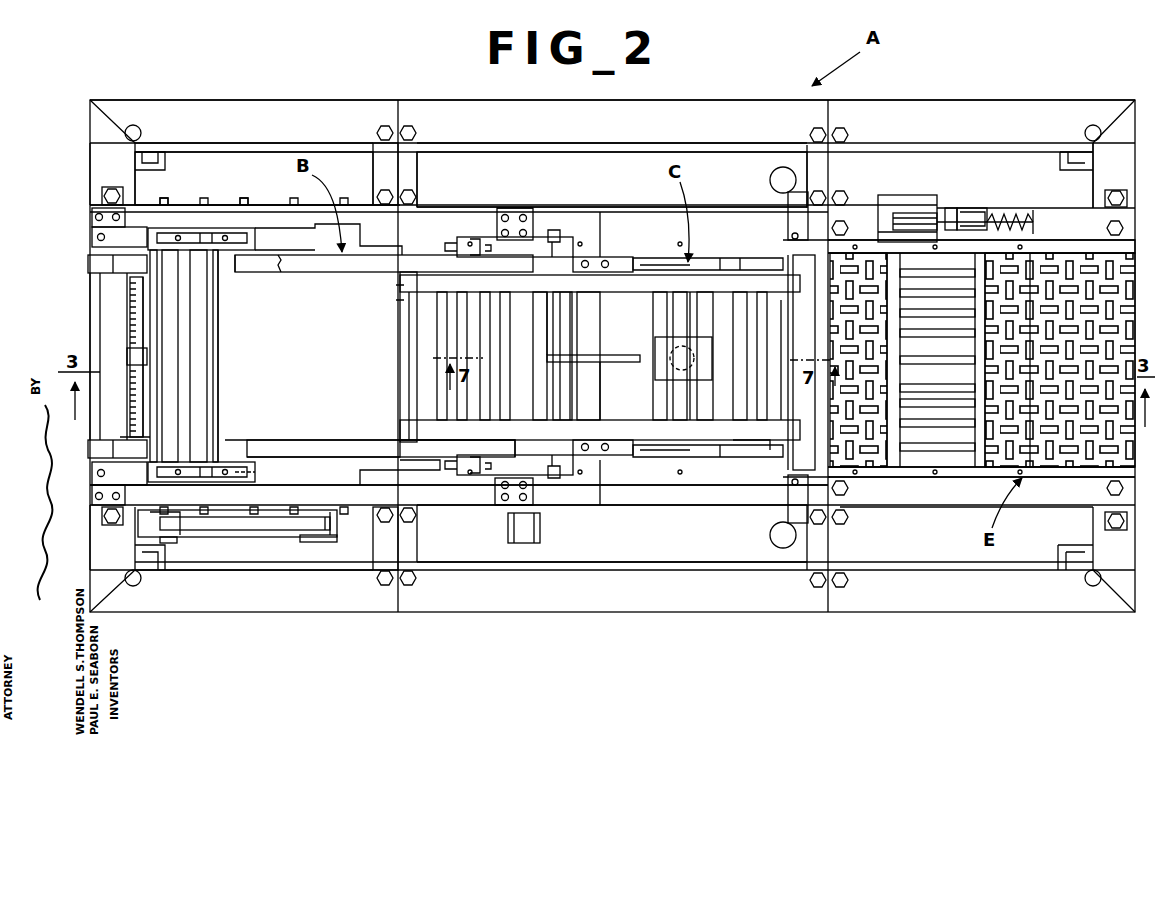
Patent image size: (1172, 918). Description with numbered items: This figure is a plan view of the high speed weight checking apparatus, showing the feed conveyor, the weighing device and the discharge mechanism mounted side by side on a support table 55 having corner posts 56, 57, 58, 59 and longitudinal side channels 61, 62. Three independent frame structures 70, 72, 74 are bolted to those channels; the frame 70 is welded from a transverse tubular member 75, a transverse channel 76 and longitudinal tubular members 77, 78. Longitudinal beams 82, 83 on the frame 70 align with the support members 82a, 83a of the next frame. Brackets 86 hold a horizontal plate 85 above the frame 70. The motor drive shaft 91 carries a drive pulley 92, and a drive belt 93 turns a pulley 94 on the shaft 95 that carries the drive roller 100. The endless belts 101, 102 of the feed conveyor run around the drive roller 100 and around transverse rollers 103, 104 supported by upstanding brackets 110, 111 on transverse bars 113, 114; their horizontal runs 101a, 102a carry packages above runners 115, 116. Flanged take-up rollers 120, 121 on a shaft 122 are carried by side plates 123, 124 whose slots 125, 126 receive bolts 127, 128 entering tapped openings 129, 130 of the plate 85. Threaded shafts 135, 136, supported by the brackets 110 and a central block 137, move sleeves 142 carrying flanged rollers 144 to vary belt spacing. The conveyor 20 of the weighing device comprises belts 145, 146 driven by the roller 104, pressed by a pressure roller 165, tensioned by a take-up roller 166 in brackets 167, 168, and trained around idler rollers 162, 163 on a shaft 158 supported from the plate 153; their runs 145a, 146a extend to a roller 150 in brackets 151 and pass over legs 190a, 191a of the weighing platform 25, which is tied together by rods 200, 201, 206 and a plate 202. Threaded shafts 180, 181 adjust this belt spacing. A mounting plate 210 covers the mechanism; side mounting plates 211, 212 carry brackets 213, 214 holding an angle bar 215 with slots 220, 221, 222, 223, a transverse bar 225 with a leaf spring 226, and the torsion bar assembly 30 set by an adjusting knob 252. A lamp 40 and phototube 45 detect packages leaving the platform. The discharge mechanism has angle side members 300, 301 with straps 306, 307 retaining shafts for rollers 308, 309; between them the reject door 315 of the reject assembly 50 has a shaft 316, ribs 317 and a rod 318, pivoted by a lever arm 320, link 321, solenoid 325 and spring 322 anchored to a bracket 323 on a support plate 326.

The frame structure 70 is at (254, 98).
The frame structure 72 is at (552, 98).
The frame structure 74 is at (978, 98).
The transverse tubular member 75 is at (105, 156).
The longitudinal tubular member 78 is at (254, 126).
The longitudinal tubular member 77 is at (254, 582).
The corner post 58 is at (157, 163).
The corner post 59 is at (1070, 163).
The corner post 56 is at (155, 568).
The corner post 57 is at (1068, 552).
The support table 55 is at (252, 152).
The transverse channel 76 is at (378, 165).
The longitudinal side channel 62 is at (633, 152).
The longitudinal side channel 61 is at (602, 562).
The horizontal plate 153 is at (612, 345).
The support member 83 is at (262, 204).
The support member 83a is at (440, 210).
The support member 82 is at (459, 491).
The support member 82a is at (611, 492).
The angle side member 301 is at (1094, 205).
The angle side member 300 is at (910, 497).
The strap 306 is at (1062, 478).
The reject door 315 is at (934, 470).
The transverse bar 113 is at (93, 214).
The upstanding bracket 110 is at (95, 238).
The endless belt 102 is at (100, 262).
The endless belt 101 is at (100, 450).
The flanged roller 144 is at (120, 267).
The sleeve 142 is at (125, 284).
The transverse roller 103 is at (100, 300).
The threaded shaft 136 is at (130, 317).
The central block 137 is at (128, 352).
The threaded shaft 135 is at (140, 412).
The slot 126 is at (178, 237).
The bolt 128 is at (225, 237).
The side plate 124 is at (178, 237).
The tapped opening 130 is at (226, 237).
The slot 125 is at (178, 473).
The bolt 127 is at (226, 473).
The tapped opening 129 is at (248, 472).
The horizontal run 101a is at (355, 450).
The bracket 86 is at (340, 228).
The horizontal run 102a is at (318, 262).
The runner 116 is at (258, 272).
The take-up roller 121 is at (190, 285).
The shaft 122 is at (200, 316).
The drive roller 100 is at (172, 332).
The horizontal plate 85 is at (259, 356).
The take-up roller 120 is at (218, 438).
The runner 115 is at (288, 448).
The endless belt 145 is at (400, 430).
The endless belt 146 is at (400, 290).
The take-up roller 166 is at (408, 306).
The bracket 168 is at (420, 255).
The bracket 167 is at (428, 466).
The upstanding bracket 111 is at (497, 235).
The transverse bar 114 is at (515, 208).
The threaded shaft 181 is at (554, 230).
The threaded shaft 180 is at (556, 480).
The adjusting knob 252 is at (510, 535).
The mounting plate 210 is at (598, 257).
The upstanding bracket 214 is at (570, 260).
The upstanding bracket 213 is at (590, 457).
The horizontal run 146a is at (630, 270).
The horizontal run 145a is at (635, 455).
The side mounting plate 212 is at (645, 263).
The side mounting plate 211 is at (684, 455).
The horizontal leg 191a is at (700, 264).
The horizontal leg 190a is at (692, 460).
The conveyor 20 is at (716, 262).
The bracket 151 is at (778, 250).
The phototube 45 is at (790, 218).
The lamp 40 is at (790, 503).
The pressure roller 165 is at (485, 283).
The transverse roller 104 is at (530, 308).
The transverse slot 222 is at (575, 300).
The rod 200 is at (668, 305).
The rod 201 is at (700, 300).
The idler roller 163 is at (750, 305).
The transverse slot 223 is at (560, 296).
The torsion bar assembly 30 is at (604, 354).
The leaf spring 226 is at (622, 352).
The weighing platform 25 is at (700, 300).
The angle bar 215 is at (560, 358).
The transverse bar 225 is at (590, 392).
The transverse slot 221 is at (568, 403).
The inverted U-shaped plate 202 is at (672, 365).
The transverse slot 220 is at (556, 415).
The rod 206 is at (682, 420).
The shaft 158 is at (736, 420).
The transverse roller 150 is at (805, 408).
The idler roller 162 is at (748, 442).
The drive belt 93 is at (255, 522).
The pulley 94 is at (205, 538).
The shaft 95 is at (170, 543).
The drive shaft 91 is at (312, 542).
The drive pulley 92 is at (332, 525).
The side plate 123 is at (148, 513).
The reject assembly 50 is at (905, 196).
The solenoid 325 is at (906, 214).
The link 321 is at (950, 208).
The support plate 326 is at (966, 208).
The lever arm 320 is at (978, 208).
The spring 322 is at (1008, 215).
The bracket 323 is at (1020, 212).
The strap 307 is at (1040, 245).
The roller 309 is at (1036, 280).
The roller 308 is at (878, 275).
The rib 317 is at (895, 312).
The transverse rod 318 is at (990, 335).
The shaft 316 is at (955, 430).